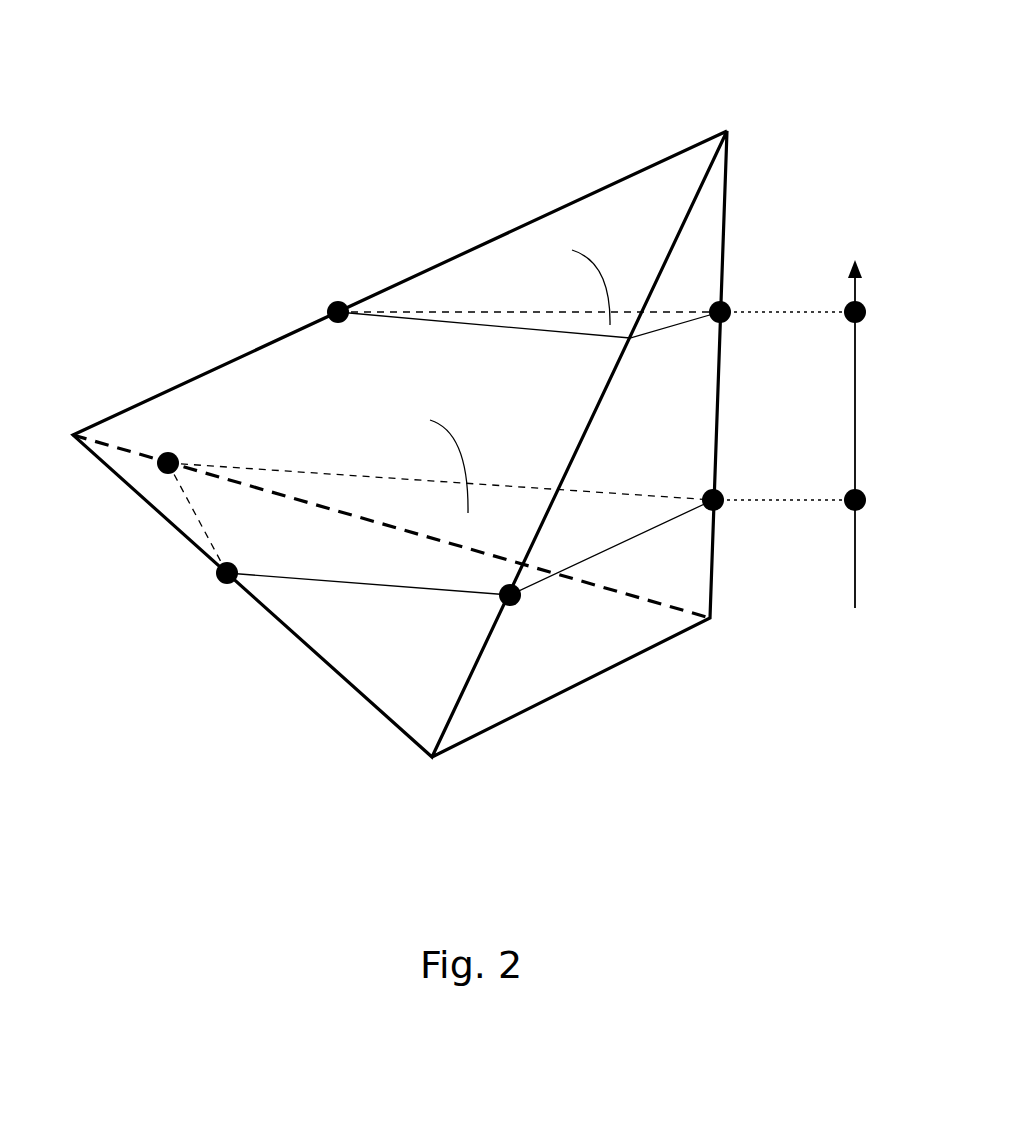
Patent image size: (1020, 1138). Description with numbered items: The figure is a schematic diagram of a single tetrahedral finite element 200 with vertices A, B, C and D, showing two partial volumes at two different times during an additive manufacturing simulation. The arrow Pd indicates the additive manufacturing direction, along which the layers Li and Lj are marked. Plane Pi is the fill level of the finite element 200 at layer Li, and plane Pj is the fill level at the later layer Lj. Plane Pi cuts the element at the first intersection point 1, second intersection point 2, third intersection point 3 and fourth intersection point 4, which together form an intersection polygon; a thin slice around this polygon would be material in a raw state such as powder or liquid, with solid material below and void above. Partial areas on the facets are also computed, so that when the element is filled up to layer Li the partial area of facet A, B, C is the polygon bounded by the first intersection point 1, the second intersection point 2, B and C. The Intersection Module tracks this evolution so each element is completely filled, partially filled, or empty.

The finite element 200 is at (377, 84).
The intersection point I1 1 is at (525, 619).
The intersection point I2 2 is at (737, 523).
The intersection point I3 3 is at (184, 435).
The intersection point I4 4 is at (200, 591).